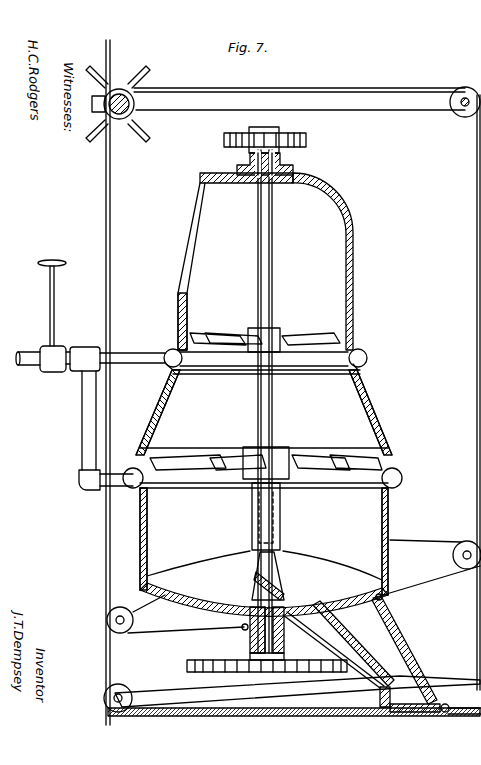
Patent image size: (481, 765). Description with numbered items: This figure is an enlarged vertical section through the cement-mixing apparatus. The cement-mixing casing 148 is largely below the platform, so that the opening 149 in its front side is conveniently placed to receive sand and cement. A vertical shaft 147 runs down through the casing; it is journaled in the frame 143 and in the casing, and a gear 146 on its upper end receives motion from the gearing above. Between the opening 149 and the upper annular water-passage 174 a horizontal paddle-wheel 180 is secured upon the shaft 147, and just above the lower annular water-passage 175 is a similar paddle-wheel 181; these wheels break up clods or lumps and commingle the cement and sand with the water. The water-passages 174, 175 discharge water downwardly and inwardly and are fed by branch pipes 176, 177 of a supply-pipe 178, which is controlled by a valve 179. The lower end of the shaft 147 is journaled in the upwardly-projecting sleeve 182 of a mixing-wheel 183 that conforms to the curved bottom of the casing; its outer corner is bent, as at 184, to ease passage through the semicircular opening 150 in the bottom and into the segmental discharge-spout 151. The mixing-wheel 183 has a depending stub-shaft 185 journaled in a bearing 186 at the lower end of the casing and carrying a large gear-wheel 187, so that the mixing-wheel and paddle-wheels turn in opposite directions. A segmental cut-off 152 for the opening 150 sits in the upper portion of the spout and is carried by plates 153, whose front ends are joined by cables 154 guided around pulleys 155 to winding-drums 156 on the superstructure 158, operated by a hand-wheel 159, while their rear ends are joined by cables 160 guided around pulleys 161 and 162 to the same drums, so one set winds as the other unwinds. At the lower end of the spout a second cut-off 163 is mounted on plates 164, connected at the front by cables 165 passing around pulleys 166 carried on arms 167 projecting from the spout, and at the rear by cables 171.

The frame 143 is at (293, 162).
The gears 146 is at (224, 140).
The vertical shafts 147 is at (258, 262).
The cement-mixing casings 148 is at (353, 222).
The openings 149 is at (177, 266).
The semicircular opening 150 is at (340, 592).
The segmental discharge-spout 151 is at (408, 640).
The cut-off 152 is at (345, 626).
The plates 153 is at (384, 600).
The cables 154 is at (118, 296).
The pulleys 155 is at (122, 602).
The winding-drums 156 is at (126, 120).
The superstructure 158 is at (328, 108).
The hand-wheel 159 is at (150, 72).
The cables 160 is at (358, 90).
The pulleys 161 is at (468, 540).
The pulleys 162 is at (456, 112).
The cut-off 163 is at (400, 696).
The plates 164 is at (418, 712).
The cables 165 is at (110, 56).
The pulleys 166 is at (114, 712).
The arms 167 is at (297, 691).
The cables 171 is at (474, 716).
The annular water-passage 174 is at (368, 355).
The annular water-passage 175 is at (402, 476).
The branch pipe 176 is at (142, 344).
The branch pipe 177 is at (96, 490).
The supply-pipe 178 is at (50, 372).
The valve 179 is at (56, 300).
The horizontal paddle-wheel 180 is at (218, 335).
The paddle-wheel 181 is at (210, 450).
The sleeve 182 is at (252, 525).
The mixing-wheel 183 is at (264, 571).
The bent outer corner 184 is at (284, 596).
The stub-shaft 185 is at (250, 640).
The bearing 186 is at (284, 648).
The gear-wheel 187 is at (186, 666).